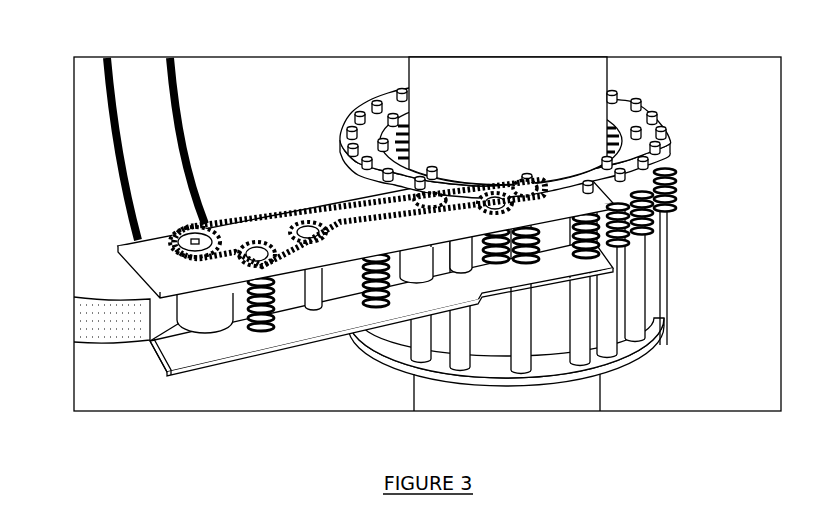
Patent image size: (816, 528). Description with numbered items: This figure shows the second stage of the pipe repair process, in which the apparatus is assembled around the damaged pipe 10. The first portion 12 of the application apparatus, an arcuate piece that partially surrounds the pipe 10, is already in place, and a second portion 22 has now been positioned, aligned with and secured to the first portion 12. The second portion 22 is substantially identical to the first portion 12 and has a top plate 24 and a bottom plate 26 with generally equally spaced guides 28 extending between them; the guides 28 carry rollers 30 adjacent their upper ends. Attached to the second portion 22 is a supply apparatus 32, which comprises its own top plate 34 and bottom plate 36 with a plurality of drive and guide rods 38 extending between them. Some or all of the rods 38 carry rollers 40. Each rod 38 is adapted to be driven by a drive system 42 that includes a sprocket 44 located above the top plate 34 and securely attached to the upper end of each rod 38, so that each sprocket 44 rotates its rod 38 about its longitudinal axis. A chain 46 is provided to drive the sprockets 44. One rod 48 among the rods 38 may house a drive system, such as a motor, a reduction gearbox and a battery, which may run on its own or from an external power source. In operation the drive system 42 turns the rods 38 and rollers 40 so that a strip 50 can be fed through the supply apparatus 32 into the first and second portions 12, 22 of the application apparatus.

The pipe 10 is at (540, 103).
The first portion of application apparatus 12 is at (632, 100).
The second portion of application apparatus 22 is at (648, 143).
The top plate 24 is at (672, 180).
The bottom plate 26 is at (636, 352).
The guides 28 is at (666, 295).
The rollers 30 is at (664, 210).
The supply apparatus 32 is at (193, 371).
The top plate 34 is at (163, 265).
The bottom plate 36 is at (240, 335).
The drive and guide rods 38 is at (311, 296).
The rollers 40 is at (263, 333).
The drive system 42 is at (130, 267).
The sprocket 44 is at (203, 228).
The chain 46 is at (278, 222).
The rod 48 is at (148, 344).
The strip 50 is at (92, 312).